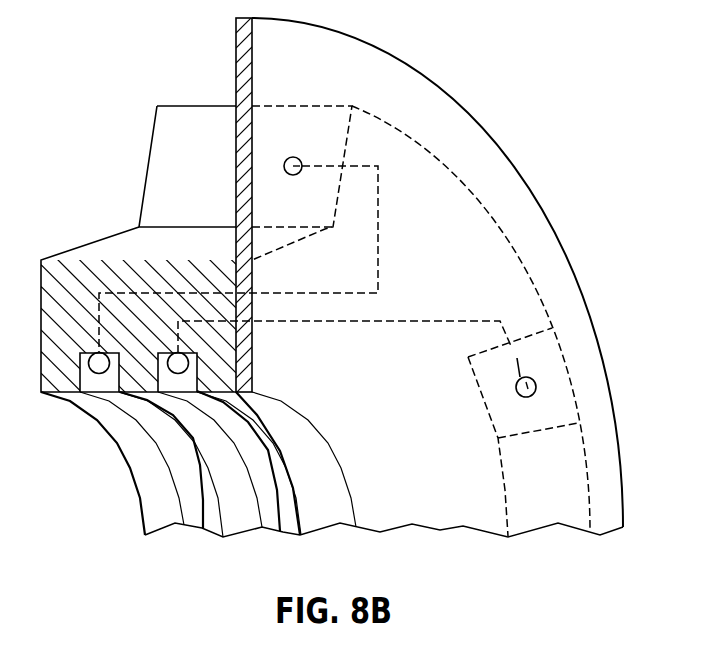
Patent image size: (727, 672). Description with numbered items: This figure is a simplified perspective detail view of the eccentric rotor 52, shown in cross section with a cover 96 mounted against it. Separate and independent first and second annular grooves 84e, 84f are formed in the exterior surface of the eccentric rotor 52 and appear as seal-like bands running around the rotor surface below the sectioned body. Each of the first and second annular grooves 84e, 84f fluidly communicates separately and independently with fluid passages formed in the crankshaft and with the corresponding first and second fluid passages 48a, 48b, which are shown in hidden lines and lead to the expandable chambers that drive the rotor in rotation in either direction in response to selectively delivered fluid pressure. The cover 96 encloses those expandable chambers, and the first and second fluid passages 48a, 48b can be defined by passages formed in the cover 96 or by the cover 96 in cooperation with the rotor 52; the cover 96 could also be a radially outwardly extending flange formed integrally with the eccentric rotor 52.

The cover 96 is at (277, 60).
The eccentric rotor 52 is at (133, 247).
The first fluid passage 48a is at (363, 165).
The second fluid passage 48b is at (517, 358).
The first annular groove 84e is at (170, 425).
The second annular groove 84f is at (278, 497).